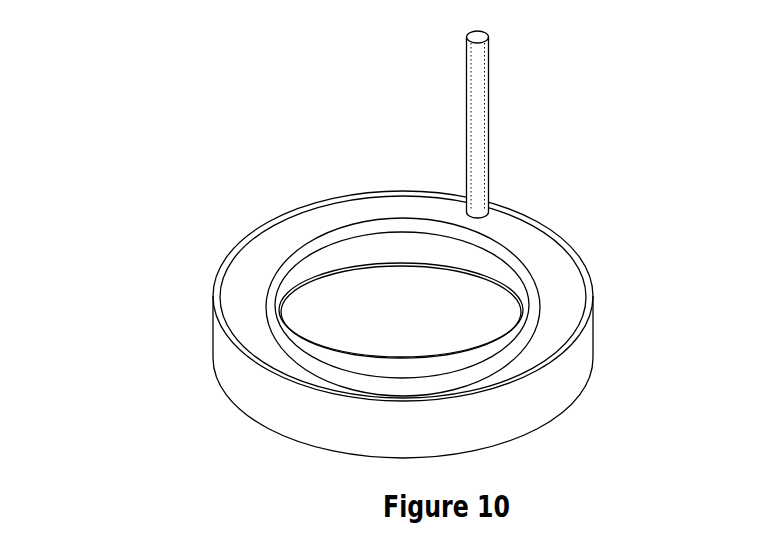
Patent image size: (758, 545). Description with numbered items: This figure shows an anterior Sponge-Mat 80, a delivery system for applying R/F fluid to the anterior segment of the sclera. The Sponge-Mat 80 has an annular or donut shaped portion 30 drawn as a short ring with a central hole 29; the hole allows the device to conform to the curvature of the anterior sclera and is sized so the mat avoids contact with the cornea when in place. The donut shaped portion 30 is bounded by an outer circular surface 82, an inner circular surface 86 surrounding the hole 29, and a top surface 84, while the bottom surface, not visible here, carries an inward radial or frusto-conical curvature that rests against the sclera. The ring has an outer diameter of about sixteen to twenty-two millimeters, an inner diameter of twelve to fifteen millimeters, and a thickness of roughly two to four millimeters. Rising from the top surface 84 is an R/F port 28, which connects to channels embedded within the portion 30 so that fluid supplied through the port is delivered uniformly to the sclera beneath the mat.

The R/F port 28 is at (500, 37).
The hole 29 is at (440, 295).
The annular or donut shaped portion 30 is at (245, 290).
The anterior Sponge-Mat 80 is at (572, 248).
The outer circular surface 82 is at (258, 394).
The top surface 84 is at (550, 343).
The inner circular surface 86 is at (355, 254).